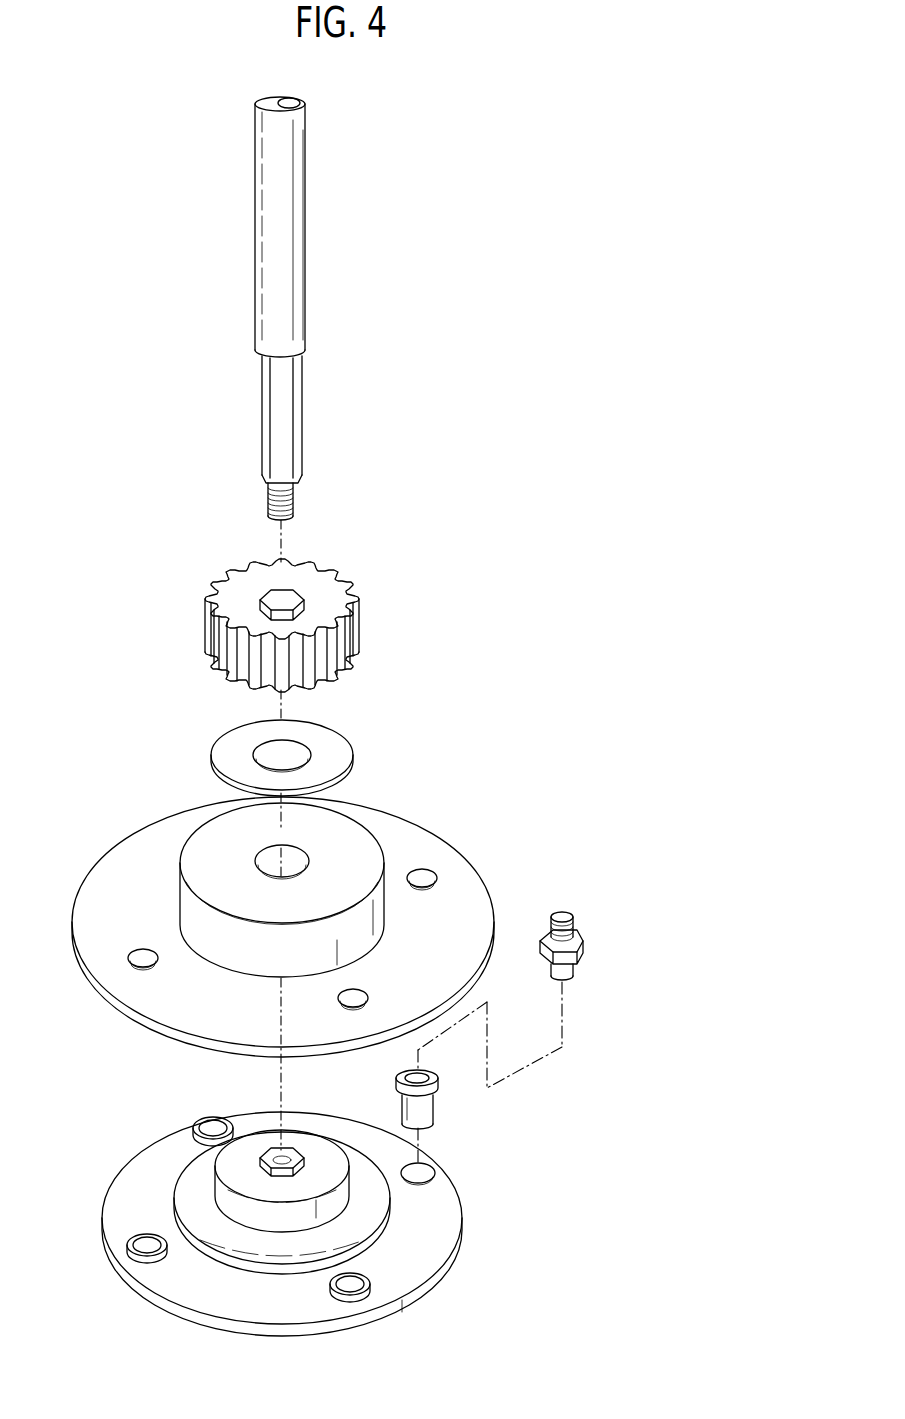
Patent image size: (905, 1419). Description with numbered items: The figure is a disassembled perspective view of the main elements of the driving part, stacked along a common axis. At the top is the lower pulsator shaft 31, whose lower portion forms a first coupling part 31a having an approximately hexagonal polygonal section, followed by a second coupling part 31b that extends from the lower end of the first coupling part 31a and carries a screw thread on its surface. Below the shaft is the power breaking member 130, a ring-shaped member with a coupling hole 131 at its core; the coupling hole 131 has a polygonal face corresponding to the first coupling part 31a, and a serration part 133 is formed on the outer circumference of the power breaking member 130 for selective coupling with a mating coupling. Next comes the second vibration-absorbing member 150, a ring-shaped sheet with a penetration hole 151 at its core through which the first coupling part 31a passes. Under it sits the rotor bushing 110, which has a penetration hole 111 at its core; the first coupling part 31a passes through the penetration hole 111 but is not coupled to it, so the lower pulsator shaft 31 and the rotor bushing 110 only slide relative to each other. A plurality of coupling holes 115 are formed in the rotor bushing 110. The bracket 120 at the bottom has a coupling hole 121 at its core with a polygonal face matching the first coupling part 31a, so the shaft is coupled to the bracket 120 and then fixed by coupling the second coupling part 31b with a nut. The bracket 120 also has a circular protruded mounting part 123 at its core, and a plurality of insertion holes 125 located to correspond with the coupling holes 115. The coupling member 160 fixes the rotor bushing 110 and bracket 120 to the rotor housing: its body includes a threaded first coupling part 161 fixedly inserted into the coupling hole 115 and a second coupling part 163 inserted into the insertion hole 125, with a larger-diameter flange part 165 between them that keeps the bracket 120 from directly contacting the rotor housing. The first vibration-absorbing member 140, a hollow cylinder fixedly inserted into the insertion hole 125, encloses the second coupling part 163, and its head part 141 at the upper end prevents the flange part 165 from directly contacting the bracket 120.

The lower pulsator shaft 31 is at (320, 308).
The first coupling part 31a is at (296, 404).
The second coupling part 31b is at (296, 494).
The power breaking member 130 is at (304, 605).
The coupling hole 131 is at (268, 600).
The serration part 133 is at (330, 652).
The second vibration-absorbing member 150 is at (314, 742).
The penetration hole 151 is at (268, 760).
The rotor bushing 110 is at (302, 909).
The penetration hole 111 is at (274, 862).
The coupling hole 115 is at (434, 879).
The coupling member 160 is at (593, 956).
The first coupling part 161 is at (575, 922).
The second coupling part 163 is at (573, 972).
The flange part 165 is at (542, 962).
The first vibration-absorbing member 140 is at (482, 1108).
The head part 141 is at (436, 1079).
The bracket 120 is at (310, 1202).
The coupling hole 121 is at (288, 1160).
The mounting part 123 is at (232, 1166).
The insertion hole 125 is at (436, 1171).